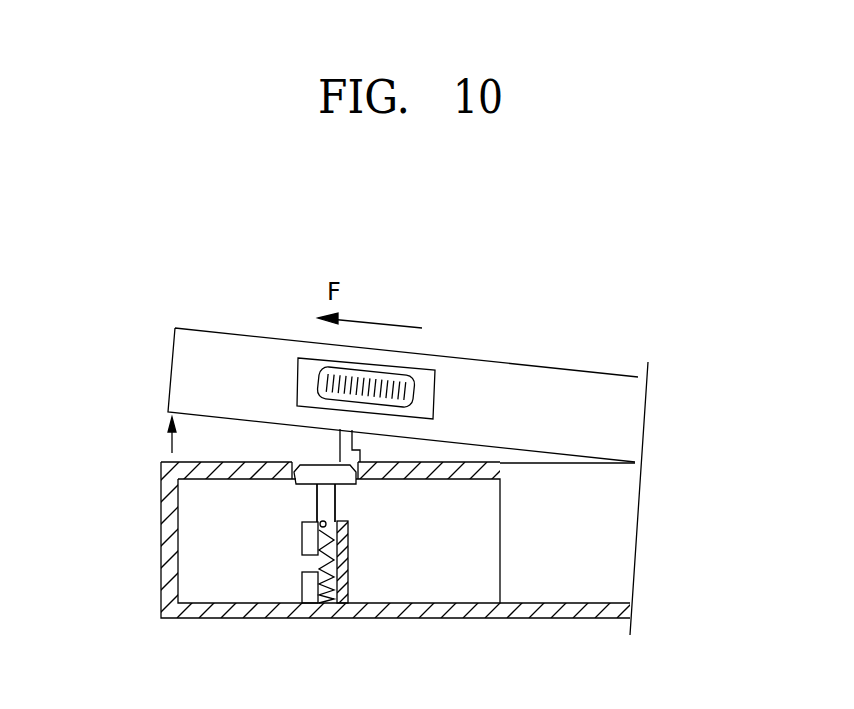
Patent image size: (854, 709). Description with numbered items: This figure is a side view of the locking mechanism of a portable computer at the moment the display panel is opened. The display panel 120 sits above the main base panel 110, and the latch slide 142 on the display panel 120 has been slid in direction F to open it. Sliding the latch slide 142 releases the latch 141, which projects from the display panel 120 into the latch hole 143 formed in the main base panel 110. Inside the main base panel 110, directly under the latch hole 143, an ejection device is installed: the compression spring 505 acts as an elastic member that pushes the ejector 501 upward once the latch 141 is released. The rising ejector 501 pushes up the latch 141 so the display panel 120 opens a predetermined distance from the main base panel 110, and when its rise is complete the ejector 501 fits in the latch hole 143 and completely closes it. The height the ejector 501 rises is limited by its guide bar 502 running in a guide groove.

The main base panel 110 is at (168, 500).
The display panel 120 is at (187, 370).
The latch 141 is at (352, 452).
The latch slide 142 is at (372, 385).
The latch hole 143 is at (306, 466).
The ejector 501 is at (306, 481).
The guide bar 502 is at (320, 528).
The compression spring 505 is at (330, 535).